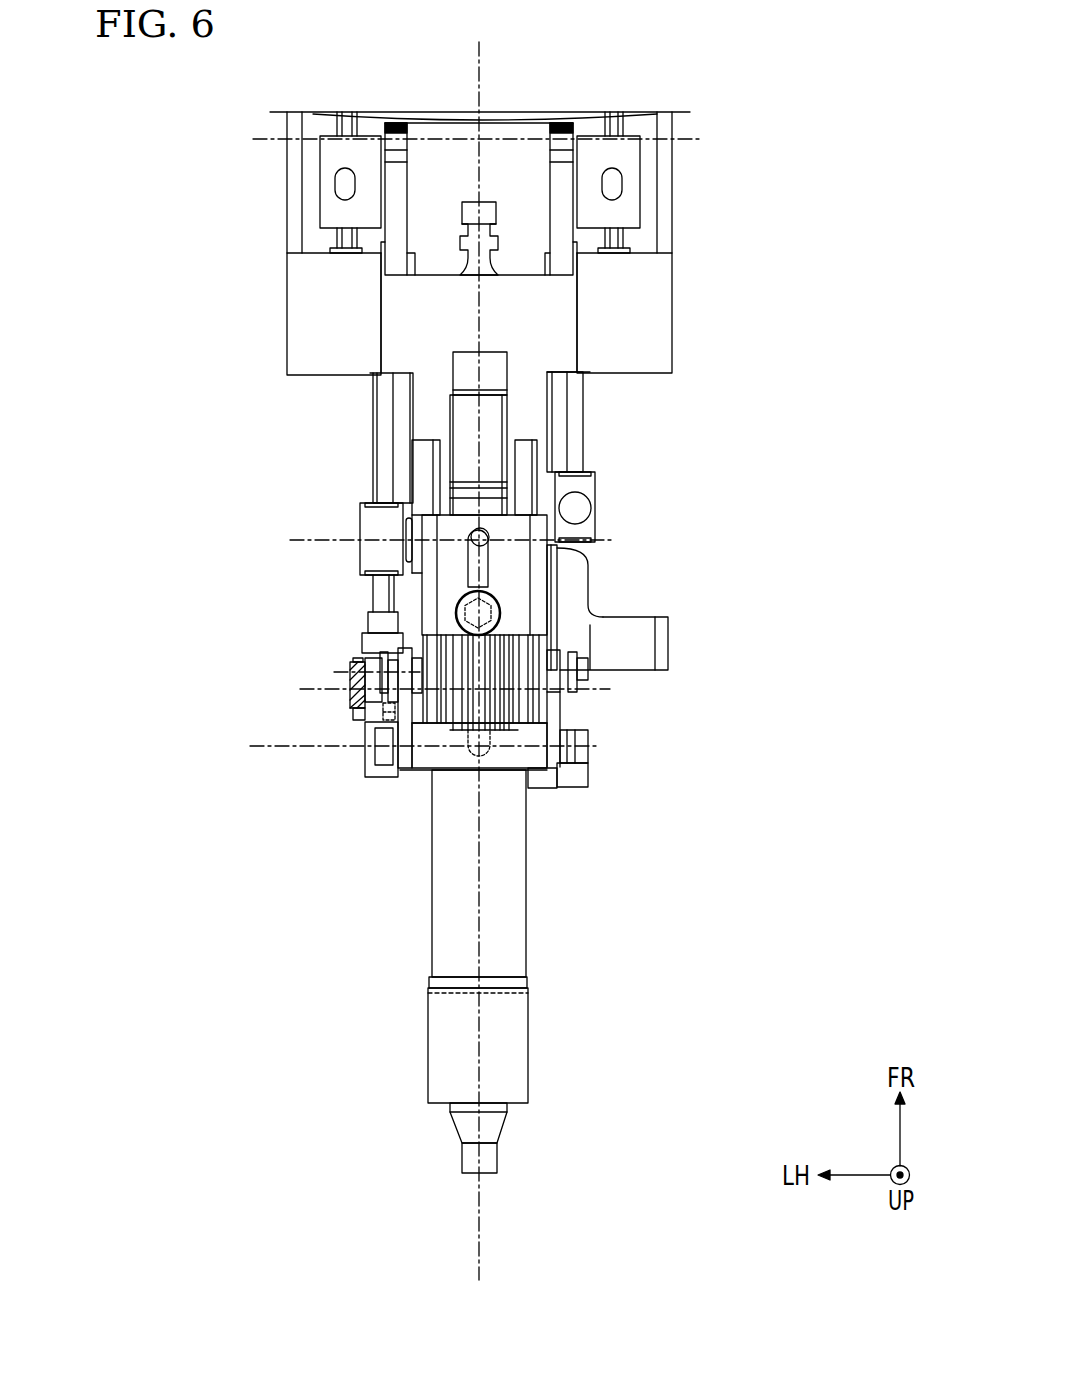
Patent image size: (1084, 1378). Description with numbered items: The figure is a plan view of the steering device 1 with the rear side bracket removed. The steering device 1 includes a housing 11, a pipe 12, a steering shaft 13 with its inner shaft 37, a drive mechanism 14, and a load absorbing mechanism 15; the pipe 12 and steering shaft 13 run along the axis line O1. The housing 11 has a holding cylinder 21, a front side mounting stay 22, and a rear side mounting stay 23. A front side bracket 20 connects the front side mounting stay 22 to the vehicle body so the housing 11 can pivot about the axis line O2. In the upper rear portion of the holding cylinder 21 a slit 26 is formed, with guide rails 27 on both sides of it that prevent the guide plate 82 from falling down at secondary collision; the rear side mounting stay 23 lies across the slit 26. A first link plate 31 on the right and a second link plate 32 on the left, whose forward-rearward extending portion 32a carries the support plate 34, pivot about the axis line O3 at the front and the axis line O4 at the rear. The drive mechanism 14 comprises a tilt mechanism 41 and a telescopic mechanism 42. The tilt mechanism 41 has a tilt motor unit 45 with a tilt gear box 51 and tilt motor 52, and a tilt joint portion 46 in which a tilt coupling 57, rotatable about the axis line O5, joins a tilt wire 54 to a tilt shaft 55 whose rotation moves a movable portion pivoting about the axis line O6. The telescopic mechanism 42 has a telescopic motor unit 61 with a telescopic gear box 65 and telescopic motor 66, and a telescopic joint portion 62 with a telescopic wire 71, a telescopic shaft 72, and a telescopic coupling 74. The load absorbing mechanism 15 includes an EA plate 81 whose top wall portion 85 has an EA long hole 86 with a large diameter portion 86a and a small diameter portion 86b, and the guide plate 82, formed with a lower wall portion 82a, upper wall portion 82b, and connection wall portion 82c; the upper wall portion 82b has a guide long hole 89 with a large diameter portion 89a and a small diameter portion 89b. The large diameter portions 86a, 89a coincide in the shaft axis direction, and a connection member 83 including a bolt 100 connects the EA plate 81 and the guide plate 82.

The steering device 1 is at (792, 96).
The housing 11 is at (580, 318).
The pipe 12 is at (538, 928).
The steering shaft 13 is at (502, 1133).
The drive mechanism 14 is at (496, 314).
The load absorbing mechanism 15 is at (524, 504).
The front side bracket 20 is at (625, 157).
The holding cylinder 21 is at (430, 400).
The front side mounting stay 22 is at (398, 128).
The rear side mounting stay 23 is at (537, 727).
The slit 26 is at (507, 372).
The guide rail 27 is at (433, 468).
The first link plate 31 is at (560, 740).
The second link plate 32 is at (402, 738).
The forward-rearward extending portion 32a is at (243, 741).
The support plate 34 is at (350, 712).
The inner shaft 37 is at (562, 1138).
The tilt mechanism 41 is at (283, 317).
The telescopic mechanism 42 is at (682, 348).
The tilt motor unit 45 is at (162, 173).
The tilt joint portion 46 is at (148, 470).
The tilt gear box 51 is at (287, 282).
The tilt motor 52 is at (307, 187).
The tilt wire 54 is at (365, 500).
The tilt shaft 55 is at (362, 643).
The tilt coupling 57 is at (373, 590).
The telescopic motor unit 61 is at (812, 186).
The telescopic joint portion 62 is at (906, 402).
The telescopic gear box 65 is at (670, 288).
The telescopic motor 66 is at (670, 193).
The telescopic wire 71 is at (585, 440).
The telescopic shaft 72 is at (592, 783).
The telescopic coupling 74 is at (596, 488).
The energy absorbing plate 81 is at (458, 732).
The guide plate 82 is at (484, 503).
The lower wall portion 82a is at (632, 633).
The upper wall portion 82b is at (505, 592).
The connection wall portion 82c is at (548, 600).
The connection member 83 is at (630, 642).
The top wall portion 85 is at (492, 730).
The EA long hole 86 is at (477, 722).
The large diameter portion 86a is at (260, 714).
The small diameter portion 86b is at (354, 815).
The guide long hole 89 is at (489, 528).
The large diameter portion 89a is at (478, 640).
The small diameter portion 89b is at (438, 416).
The bolt 100 is at (482, 637).
The axis line O1 is at (484, 1222).
The axis line O2 is at (258, 136).
The axis line O3 is at (334, 668).
The axis line O4 is at (290, 746).
The axis line O5 is at (330, 540).
The axis line O6 is at (330, 689).